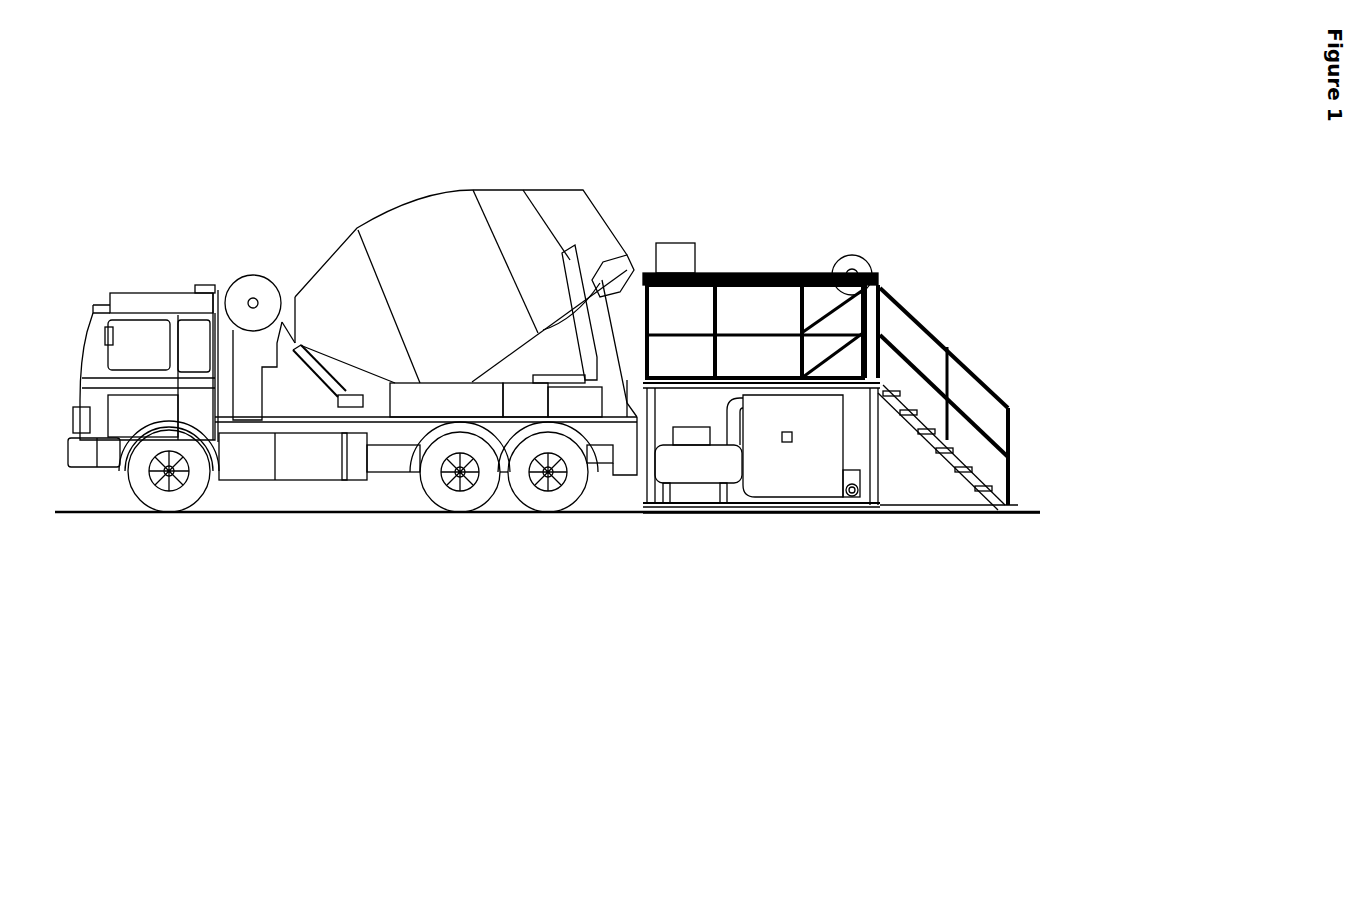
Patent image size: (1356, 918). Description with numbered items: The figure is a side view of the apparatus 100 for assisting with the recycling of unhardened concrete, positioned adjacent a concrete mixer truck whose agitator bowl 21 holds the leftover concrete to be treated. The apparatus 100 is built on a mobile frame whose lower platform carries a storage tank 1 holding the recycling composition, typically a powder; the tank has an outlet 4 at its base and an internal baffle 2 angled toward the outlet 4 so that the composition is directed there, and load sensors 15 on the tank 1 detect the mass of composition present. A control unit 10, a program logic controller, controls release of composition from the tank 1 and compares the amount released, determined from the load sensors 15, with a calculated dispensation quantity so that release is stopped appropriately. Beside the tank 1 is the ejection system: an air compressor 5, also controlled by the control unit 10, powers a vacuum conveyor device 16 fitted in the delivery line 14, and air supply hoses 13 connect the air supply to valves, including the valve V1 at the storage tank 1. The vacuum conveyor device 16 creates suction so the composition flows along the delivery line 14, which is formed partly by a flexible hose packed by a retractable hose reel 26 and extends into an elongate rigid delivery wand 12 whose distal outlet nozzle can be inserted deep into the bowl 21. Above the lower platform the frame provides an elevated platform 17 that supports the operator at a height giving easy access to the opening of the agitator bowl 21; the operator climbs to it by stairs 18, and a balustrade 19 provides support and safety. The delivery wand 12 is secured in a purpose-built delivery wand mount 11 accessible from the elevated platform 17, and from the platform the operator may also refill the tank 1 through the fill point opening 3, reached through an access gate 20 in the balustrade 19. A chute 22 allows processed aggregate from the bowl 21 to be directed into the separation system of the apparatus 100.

The apparatus 100 is at (883, 232).
The storage tank 1 is at (763, 520).
The internal baffle 2 is at (795, 517).
The fill point opening 3 is at (967, 358).
The storage tank outlet 4 is at (873, 518).
The air compressor 5 is at (637, 502).
The control unit 10 is at (677, 243).
The delivery wand mount 11 is at (722, 285).
The delivery wand 12 is at (762, 273).
The air supply hoses 13 is at (660, 380).
The delivery line 14 is at (875, 285).
The load sensors 15 is at (718, 450).
The vacuum conveyor device 16 is at (907, 520).
The elevated platform 17 is at (617, 462).
The stairs 18 is at (990, 478).
The balustrade 19 is at (947, 347).
The access gate 20 is at (885, 290).
The agitator bowl 21 is at (460, 225).
The chute 22 is at (627, 245).
The retractable hose reel 26 is at (862, 248).
The valve V1 is at (683, 450).